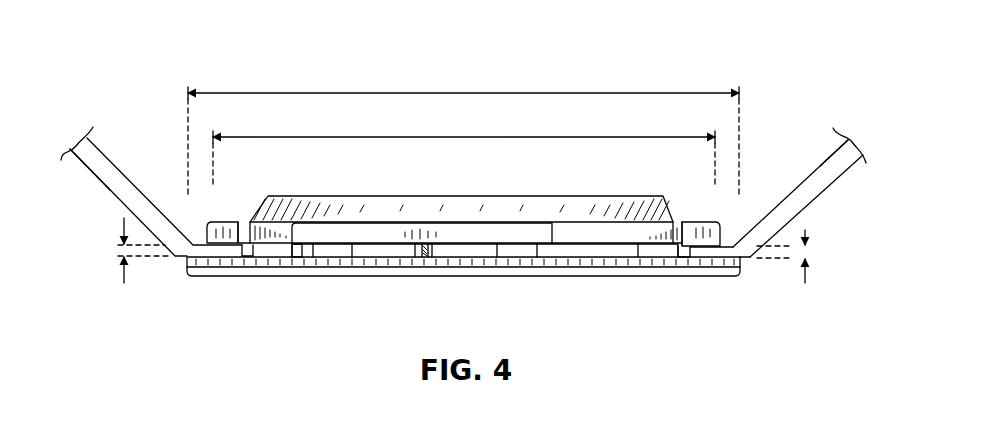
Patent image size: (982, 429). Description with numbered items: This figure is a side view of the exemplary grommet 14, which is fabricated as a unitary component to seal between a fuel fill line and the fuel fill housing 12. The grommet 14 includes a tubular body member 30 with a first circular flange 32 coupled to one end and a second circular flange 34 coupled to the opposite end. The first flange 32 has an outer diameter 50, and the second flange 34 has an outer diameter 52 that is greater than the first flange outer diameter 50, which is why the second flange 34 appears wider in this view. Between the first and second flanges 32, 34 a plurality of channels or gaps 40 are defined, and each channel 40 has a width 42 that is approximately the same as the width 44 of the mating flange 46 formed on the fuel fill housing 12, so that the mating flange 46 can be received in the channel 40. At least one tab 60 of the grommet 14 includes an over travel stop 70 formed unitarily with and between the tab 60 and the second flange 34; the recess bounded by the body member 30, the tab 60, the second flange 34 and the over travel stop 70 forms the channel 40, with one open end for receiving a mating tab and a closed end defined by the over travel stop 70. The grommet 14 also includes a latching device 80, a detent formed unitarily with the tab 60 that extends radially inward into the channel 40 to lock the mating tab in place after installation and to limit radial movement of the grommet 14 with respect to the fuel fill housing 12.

The fuel fill housing 12 is at (817, 192).
The grommet 14 is at (160, 60).
The tubular body member 30 is at (603, 251).
The first circular flange 32 is at (224, 222).
The second circular flange 34 is at (228, 281).
The channel 40 is at (733, 240).
The width 42 is at (120, 252).
The width 44 is at (807, 253).
The mating flange 46 is at (123, 173).
The outer diameter 50 is at (463, 137).
The outer diameter 52 is at (463, 93).
The tab 60 is at (372, 237).
The over travel stop 70 is at (295, 248).
The latching device 80 is at (425, 258).